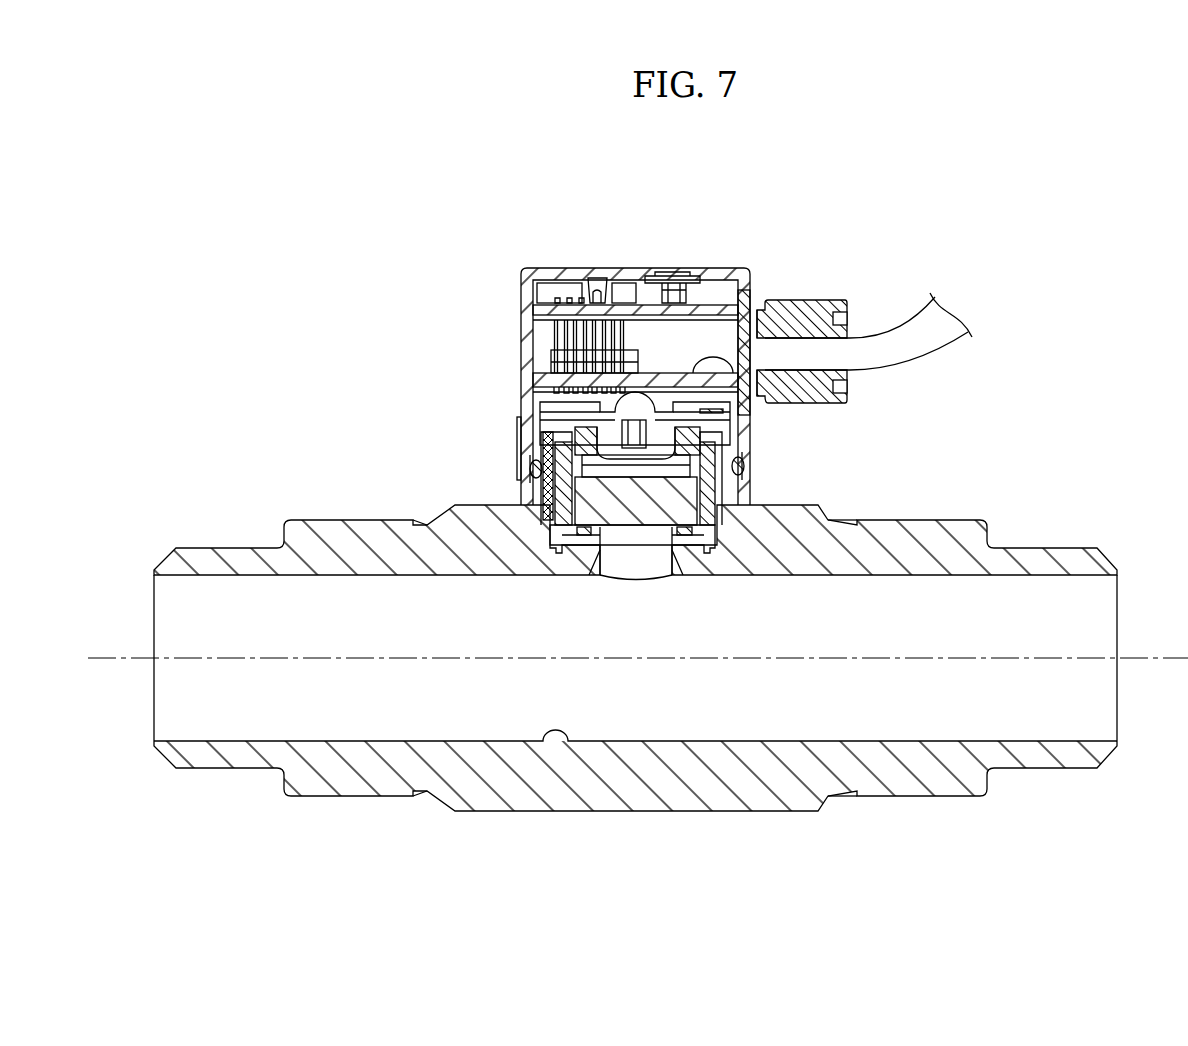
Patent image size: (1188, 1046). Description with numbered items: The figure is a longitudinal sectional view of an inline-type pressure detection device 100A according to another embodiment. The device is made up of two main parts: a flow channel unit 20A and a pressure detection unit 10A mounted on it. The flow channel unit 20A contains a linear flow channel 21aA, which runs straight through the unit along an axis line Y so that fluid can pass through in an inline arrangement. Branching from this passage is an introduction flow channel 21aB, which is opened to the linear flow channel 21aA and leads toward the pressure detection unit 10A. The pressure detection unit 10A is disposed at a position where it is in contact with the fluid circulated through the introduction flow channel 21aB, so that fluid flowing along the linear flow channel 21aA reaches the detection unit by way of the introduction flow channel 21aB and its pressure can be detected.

The inline-type pressure detection device 100A is at (996, 205).
The pressure detection unit 10A is at (522, 264).
The flow channel unit 20A is at (1020, 543).
The linear flow channel 21aA is at (543, 742).
The introduction flow channel 21aB is at (641, 567).
The axis line Y is at (1152, 660).